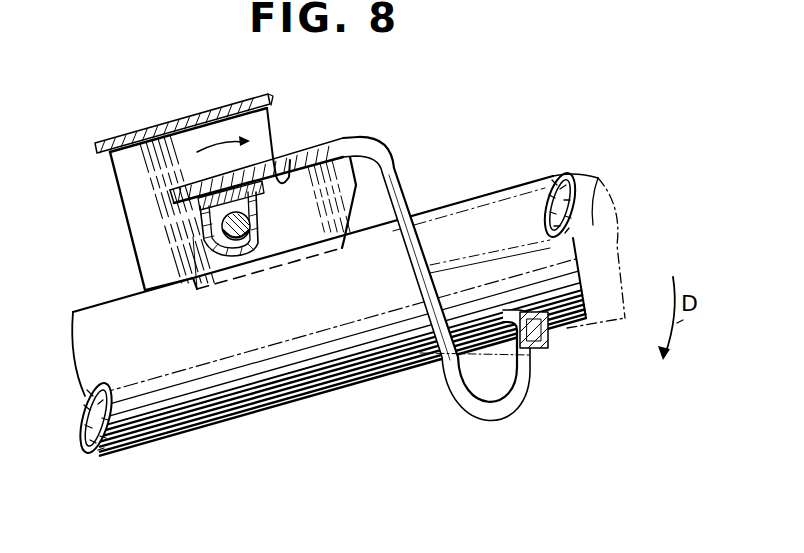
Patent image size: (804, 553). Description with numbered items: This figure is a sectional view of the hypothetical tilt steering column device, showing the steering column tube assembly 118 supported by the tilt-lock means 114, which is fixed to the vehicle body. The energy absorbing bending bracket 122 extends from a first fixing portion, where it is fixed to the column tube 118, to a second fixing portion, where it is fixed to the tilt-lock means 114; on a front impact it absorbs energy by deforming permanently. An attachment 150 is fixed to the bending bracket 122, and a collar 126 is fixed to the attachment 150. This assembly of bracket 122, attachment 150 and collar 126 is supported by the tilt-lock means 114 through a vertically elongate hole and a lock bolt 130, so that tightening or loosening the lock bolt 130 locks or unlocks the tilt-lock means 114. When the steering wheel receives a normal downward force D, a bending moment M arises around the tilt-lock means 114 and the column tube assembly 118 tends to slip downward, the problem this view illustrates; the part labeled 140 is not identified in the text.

The tilt-lock means 114 is at (262, 104).
The steering column tube assembly 118 is at (237, 393).
The energy absorbing bending bracket 122 is at (396, 191).
The collar 126 is at (215, 257).
The lock bolt 130 is at (251, 221).
The housing 140 is at (160, 188).
The attachment 150 is at (172, 217).